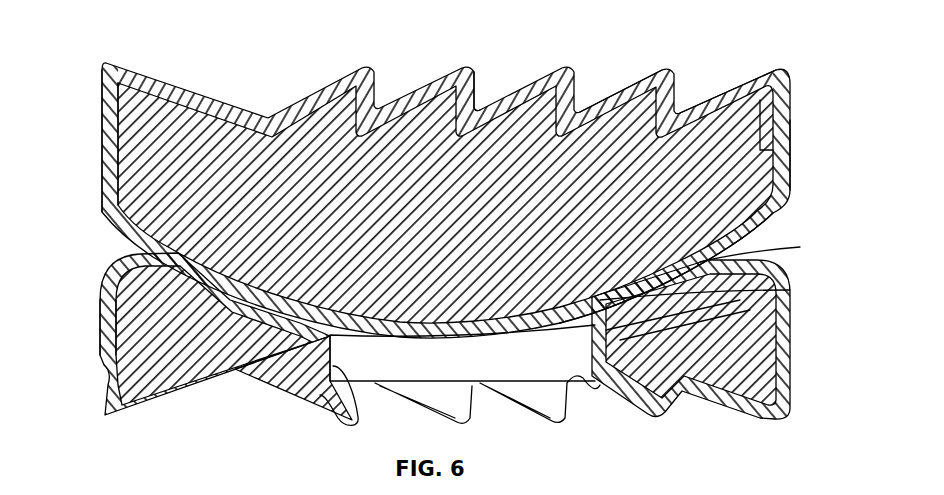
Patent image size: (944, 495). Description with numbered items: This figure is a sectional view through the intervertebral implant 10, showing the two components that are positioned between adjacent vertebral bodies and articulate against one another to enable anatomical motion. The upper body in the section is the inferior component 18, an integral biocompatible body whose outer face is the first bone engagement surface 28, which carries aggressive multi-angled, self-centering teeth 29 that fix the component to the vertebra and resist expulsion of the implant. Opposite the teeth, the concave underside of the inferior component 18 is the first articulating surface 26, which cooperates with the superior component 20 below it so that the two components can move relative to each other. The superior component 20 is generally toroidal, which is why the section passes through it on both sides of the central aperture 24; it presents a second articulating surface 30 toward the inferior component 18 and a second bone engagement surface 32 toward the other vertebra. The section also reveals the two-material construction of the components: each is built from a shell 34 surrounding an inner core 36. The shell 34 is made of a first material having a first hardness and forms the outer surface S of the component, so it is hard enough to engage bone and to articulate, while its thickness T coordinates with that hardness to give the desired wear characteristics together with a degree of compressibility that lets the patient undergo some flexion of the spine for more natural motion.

The intervertebral implant 10 is at (452, 228).
The inferior component 18 is at (797, 122).
The superior component 20 is at (797, 345).
The aperture 24 is at (370, 417).
The first articulating surface 26 is at (755, 228).
The first bone engagement surface 28 is at (624, 82).
The teeth 29 is at (480, 92).
The second articulating surface 30 is at (735, 247).
The second bone engagement surface 32 is at (228, 378).
The shell 34 is at (102, 138).
The inner core 36 is at (137, 168).
The outer surface S is at (750, 76).
The thickness T is at (750, 160).